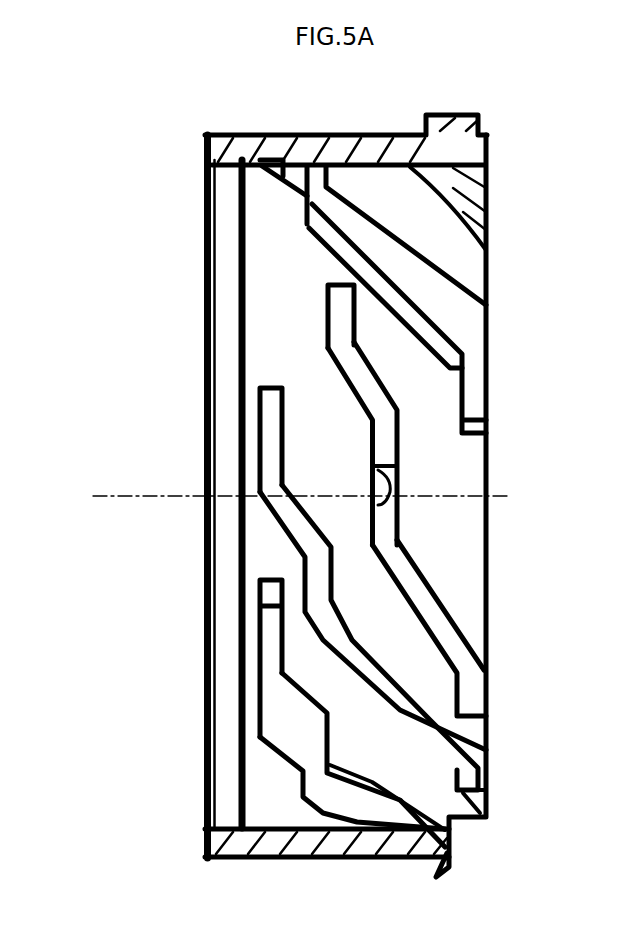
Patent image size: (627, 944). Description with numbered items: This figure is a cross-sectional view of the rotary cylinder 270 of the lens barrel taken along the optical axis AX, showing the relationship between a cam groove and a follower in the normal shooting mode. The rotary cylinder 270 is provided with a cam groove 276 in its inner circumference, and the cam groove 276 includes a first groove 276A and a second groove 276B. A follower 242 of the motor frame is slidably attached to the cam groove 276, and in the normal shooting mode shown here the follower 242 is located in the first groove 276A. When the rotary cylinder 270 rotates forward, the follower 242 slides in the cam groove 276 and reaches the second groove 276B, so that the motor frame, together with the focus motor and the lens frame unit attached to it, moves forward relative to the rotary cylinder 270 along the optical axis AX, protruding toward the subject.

The rotary cylinder 270 is at (313, 133).
The follower 242 is at (420, 470).
The cam groove 276 is at (470, 637).
The first groove 276A is at (420, 513).
The second groove 276B is at (305, 307).
The optical axis AX is at (120, 494).